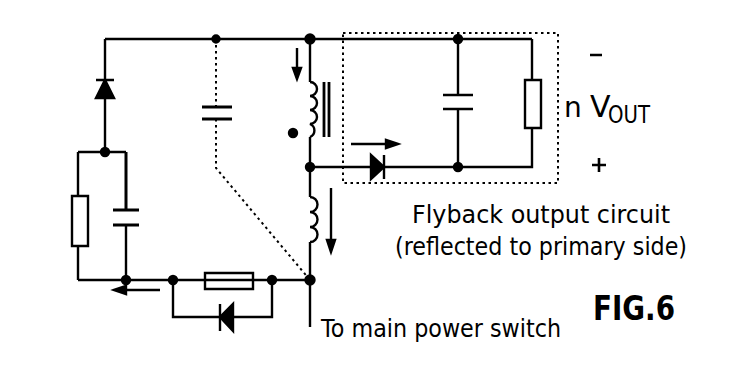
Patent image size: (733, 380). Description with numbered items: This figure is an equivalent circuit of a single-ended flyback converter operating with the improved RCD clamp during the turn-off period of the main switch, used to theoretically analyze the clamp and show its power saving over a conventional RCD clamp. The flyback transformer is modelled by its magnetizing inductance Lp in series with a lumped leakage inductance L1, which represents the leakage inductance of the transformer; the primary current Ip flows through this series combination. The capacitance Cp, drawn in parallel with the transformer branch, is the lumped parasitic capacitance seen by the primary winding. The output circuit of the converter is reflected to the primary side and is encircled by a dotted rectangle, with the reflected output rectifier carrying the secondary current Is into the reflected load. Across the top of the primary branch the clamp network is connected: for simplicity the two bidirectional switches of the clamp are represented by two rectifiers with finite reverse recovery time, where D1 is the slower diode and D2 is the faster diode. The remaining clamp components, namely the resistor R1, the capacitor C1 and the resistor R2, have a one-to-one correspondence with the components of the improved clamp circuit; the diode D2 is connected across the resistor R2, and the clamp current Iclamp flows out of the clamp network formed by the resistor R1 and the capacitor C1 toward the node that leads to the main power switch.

The slower diode D1 is at (89, 114).
The clamp resistor R1 is at (60, 199).
The clamp capacitor C1 is at (144, 196).
The lumped parasitic capacitance Cp is at (239, 159).
The magnetizing inductance Lp is at (297, 109).
The primary current Ip is at (284, 62).
The lumped leakage inductance L1 is at (307, 220).
The clamp resistor R2 is at (229, 264).
The faster diode D2 is at (222, 320).
The clamp current Iclamp is at (118, 303).
The secondary current Is is at (388, 153).